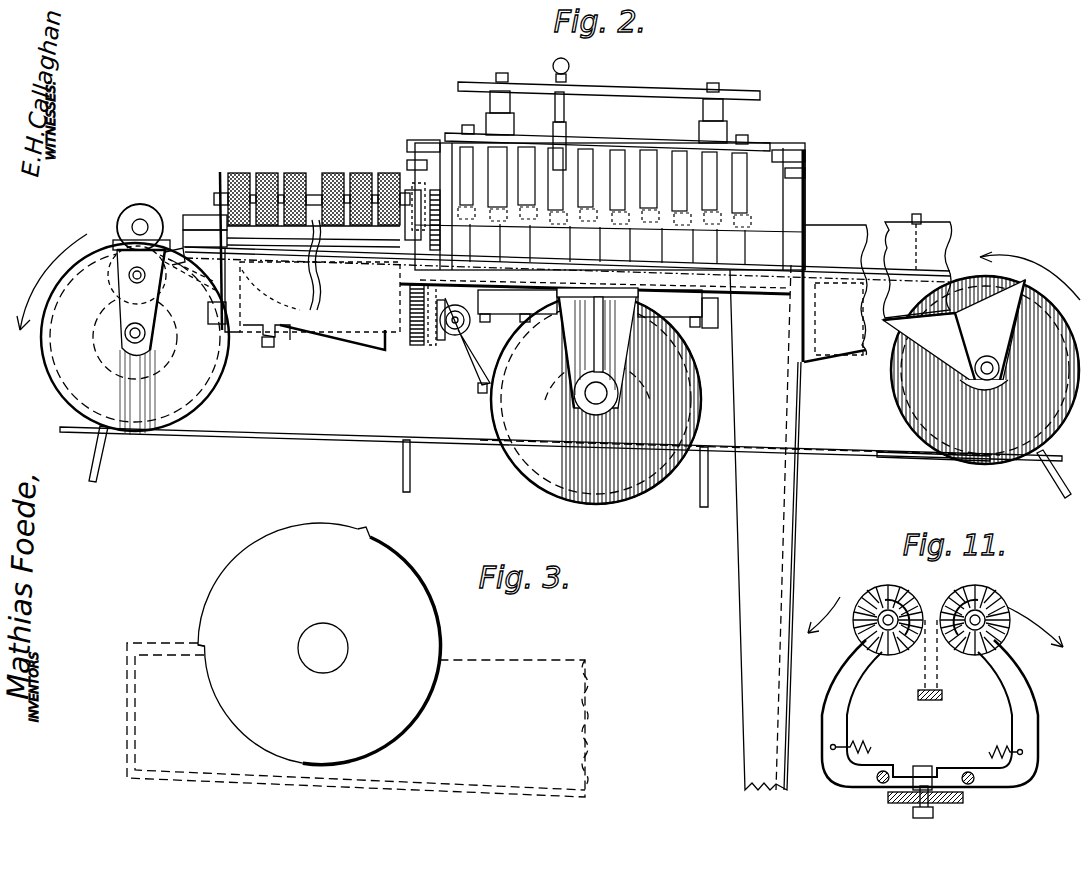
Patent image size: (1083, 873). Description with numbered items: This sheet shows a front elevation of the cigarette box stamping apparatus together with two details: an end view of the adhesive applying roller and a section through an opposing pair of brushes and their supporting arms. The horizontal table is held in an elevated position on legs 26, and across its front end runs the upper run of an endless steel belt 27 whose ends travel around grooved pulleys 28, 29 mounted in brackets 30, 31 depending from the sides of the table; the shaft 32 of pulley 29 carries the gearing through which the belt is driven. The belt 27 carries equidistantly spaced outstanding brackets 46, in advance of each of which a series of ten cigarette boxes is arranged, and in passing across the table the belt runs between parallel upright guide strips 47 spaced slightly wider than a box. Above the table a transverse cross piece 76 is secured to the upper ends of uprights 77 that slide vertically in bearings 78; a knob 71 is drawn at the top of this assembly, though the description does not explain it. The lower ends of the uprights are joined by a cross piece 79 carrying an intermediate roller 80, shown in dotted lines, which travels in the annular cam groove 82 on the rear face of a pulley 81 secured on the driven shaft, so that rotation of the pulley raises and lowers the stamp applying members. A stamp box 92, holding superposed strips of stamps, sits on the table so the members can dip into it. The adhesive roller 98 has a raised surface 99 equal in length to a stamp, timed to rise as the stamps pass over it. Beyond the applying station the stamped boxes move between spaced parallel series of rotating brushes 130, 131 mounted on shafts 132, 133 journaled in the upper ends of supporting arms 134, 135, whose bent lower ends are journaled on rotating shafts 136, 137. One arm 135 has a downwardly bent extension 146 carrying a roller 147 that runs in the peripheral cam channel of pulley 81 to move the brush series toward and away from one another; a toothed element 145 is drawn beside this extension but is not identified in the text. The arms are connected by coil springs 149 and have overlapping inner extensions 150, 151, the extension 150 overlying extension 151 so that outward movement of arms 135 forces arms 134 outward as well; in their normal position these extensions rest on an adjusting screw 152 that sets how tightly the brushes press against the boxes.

In FIG. 2, the legs 26 is at (738, 648).
In FIG. 2, the endless steel belt 27 is at (925, 462).
In FIG. 2, the grooved pulley 28 is at (902, 390).
In FIG. 2, the grooved pulley 29 is at (222, 372).
In FIG. 2, the bracket 30 is at (954, 335).
In FIG. 2, the bracket 31 is at (161, 280).
In FIG. 2, the shaft 32 is at (132, 345).
In FIG. 2, the brackets 46 is at (97, 440).
In FIG. 2, the guide strips 47 is at (820, 228).
In FIG. 2, the knob 71 is at (553, 66).
In FIG. 2, the cross piece 76 is at (640, 88).
In FIG. 2, the uprights 77 is at (489, 100).
In FIG. 2, the bearings 78 is at (500, 128).
In FIG. 2, the cross piece 79 is at (722, 308).
In FIG. 2, the intermediate roller 80 is at (590, 310).
In FIG. 2, the pulley 81 is at (550, 485).
In FIG. 2, the cam groove 82 is at (660, 405).
In FIG. 3, the stamp box 92 is at (513, 670).
In FIG. 3, the adhesive roller 98 is at (280, 553).
In FIG. 3, the raised surface 99 is at (197, 625).
In FIG. 11, the brushes 130 is at (915, 595).
In FIG. 2, the brushes 131 is at (335, 176).
In FIG. 11, the brushes 131 is at (992, 597).
In FIG. 11, the shaft 132 is at (827, 603).
In FIG. 11, the shaft 133 is at (1037, 623).
In FIG. 11, the supporting arm 134 is at (834, 676).
In FIG. 2, the supporting arm 135 is at (215, 215).
In FIG. 11, the supporting arm 135 is at (1023, 703).
In FIG. 11, the rotating shaft 136 is at (888, 763).
In FIG. 2, the rotating shaft 137 is at (330, 333).
In FIG. 11, the rotating shaft 137 is at (972, 765).
In FIG. 2, the rack 145 is at (414, 347).
In FIG. 2, the downwardly bent extension 146 is at (450, 337).
In FIG. 2, the roller 147 is at (478, 395).
In FIG. 11, the coil springs 149 is at (930, 713).
In FIG. 11, the inner extension 150 is at (940, 700).
In FIG. 11, the inner extension 151 is at (965, 803).
In FIG. 11, the adjusting screw 152 is at (887, 800).